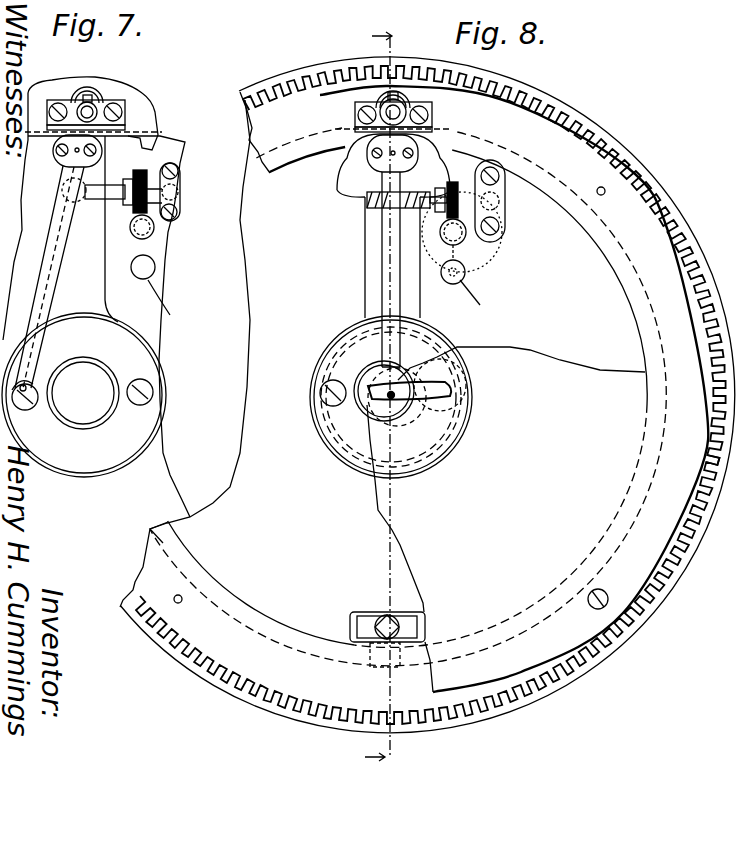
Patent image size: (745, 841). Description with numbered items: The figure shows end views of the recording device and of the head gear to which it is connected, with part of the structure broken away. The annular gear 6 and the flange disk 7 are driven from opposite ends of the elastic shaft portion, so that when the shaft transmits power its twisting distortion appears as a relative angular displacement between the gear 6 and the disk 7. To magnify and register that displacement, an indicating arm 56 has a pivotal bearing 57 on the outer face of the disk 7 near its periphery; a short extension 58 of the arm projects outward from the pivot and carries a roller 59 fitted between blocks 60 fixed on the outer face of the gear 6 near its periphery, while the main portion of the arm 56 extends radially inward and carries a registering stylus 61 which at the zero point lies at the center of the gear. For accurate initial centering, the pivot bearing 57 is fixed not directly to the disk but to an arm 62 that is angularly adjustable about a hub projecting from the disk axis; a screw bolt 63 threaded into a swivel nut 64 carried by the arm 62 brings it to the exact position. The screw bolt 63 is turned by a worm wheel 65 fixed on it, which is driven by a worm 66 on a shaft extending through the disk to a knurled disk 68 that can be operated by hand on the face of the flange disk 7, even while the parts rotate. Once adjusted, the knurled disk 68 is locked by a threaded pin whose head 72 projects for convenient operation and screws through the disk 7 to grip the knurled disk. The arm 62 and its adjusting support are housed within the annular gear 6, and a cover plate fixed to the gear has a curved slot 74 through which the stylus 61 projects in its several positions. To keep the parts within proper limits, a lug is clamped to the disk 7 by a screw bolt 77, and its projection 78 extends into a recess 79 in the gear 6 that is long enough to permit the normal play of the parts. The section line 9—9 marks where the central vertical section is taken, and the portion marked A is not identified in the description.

In FIG. 7, the gear 6 is at (133, 95).
In FIG. 8, the gear 6 is at (288, 123).
In FIG. 8, the flange disk 7 is at (540, 205).
In FIG. 8, the section line 9 is at (381, 402).
In FIG. 7, the indicating arm 56 is at (47, 287).
In FIG. 8, the indicating arm 56 is at (462, 180).
In FIG. 7, the pivotal bearing 57 is at (100, 147).
In FIG. 8, the pivotal bearing 57 is at (414, 148).
In FIG. 7, the short extension 58 is at (133, 128).
In FIG. 8, the short extension 58 is at (436, 126).
In FIG. 7, the roller 59 is at (93, 97).
In FIG. 8, the roller 59 is at (395, 100).
In FIG. 7, the blocks 60 is at (58, 103).
In FIG. 8, the blocks 60 is at (367, 106).
In FIG. 7, the registering stylus 61 is at (55, 380).
In FIG. 8, the registering stylus 61 is at (440, 385).
In FIG. 7, the arm 62 is at (92, 255).
In FIG. 7, the screw bolt 63 is at (145, 181).
In FIG. 8, the screw bolt 63 is at (460, 196).
In FIG. 8, the swivel nut 64 is at (372, 222).
In FIG. 7, the worm wheel 65 is at (172, 210).
In FIG. 8, the worm wheel 65 is at (484, 204).
In FIG. 7, the worm 66 is at (152, 228).
In FIG. 8, the worm 66 is at (500, 237).
In FIG. 8, the knurled disk 68 is at (467, 272).
In FIG. 7, the head 72 is at (170, 315).
In FIG. 8, the head 72 is at (480, 305).
In FIG. 8, the curved slot 74 is at (394, 398).
In FIG. 8, the screw bolt 77 is at (383, 612).
In FIG. 8, the projection 78 is at (350, 637).
In FIG. 8, the recess 79 is at (440, 643).
In FIG. 7, the hub A is at (97, 403).
In FIG. 8, the hub A is at (372, 397).